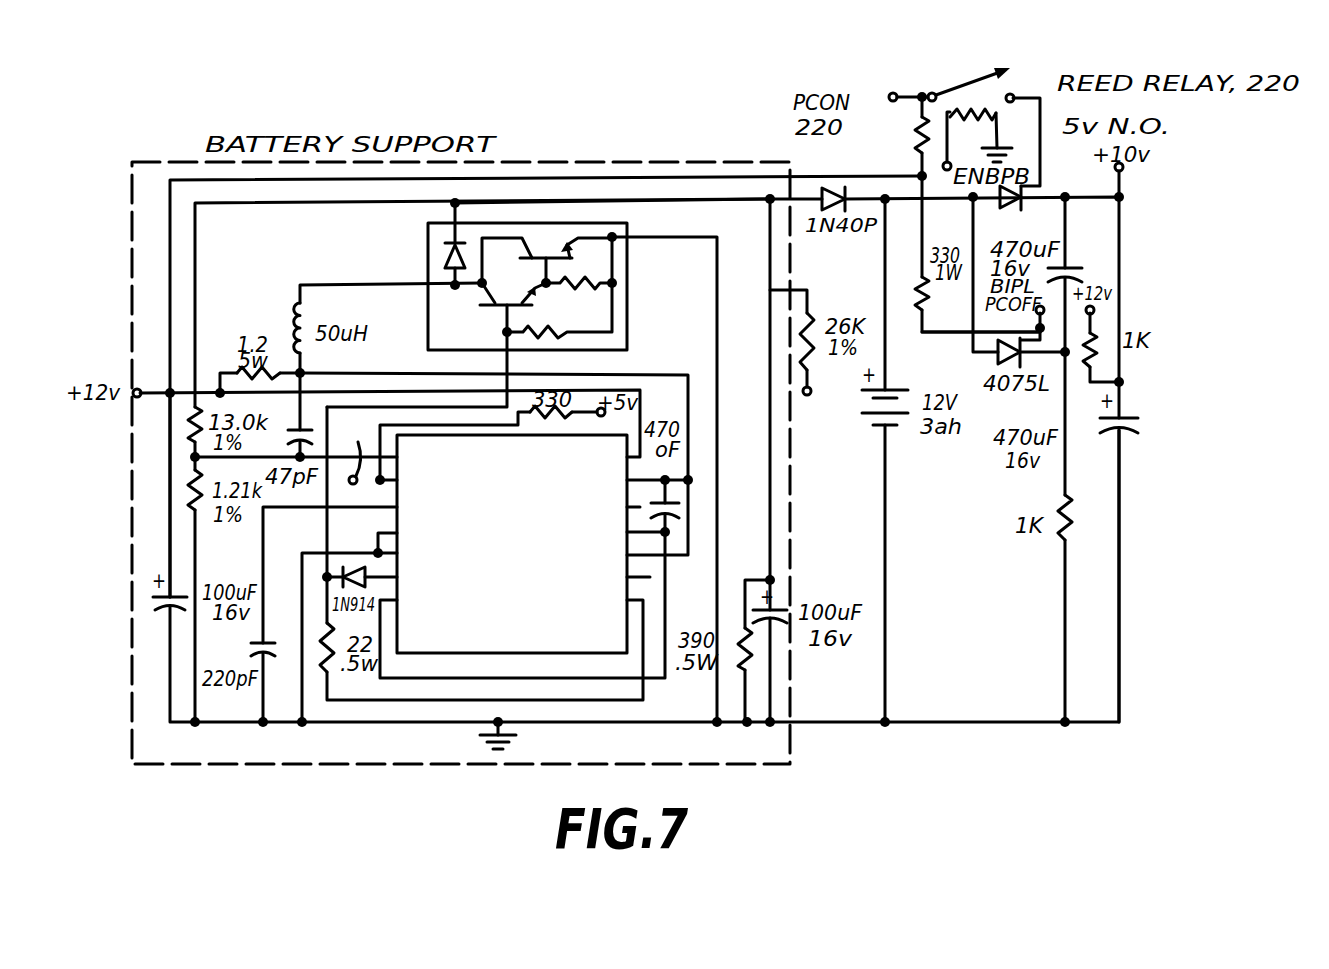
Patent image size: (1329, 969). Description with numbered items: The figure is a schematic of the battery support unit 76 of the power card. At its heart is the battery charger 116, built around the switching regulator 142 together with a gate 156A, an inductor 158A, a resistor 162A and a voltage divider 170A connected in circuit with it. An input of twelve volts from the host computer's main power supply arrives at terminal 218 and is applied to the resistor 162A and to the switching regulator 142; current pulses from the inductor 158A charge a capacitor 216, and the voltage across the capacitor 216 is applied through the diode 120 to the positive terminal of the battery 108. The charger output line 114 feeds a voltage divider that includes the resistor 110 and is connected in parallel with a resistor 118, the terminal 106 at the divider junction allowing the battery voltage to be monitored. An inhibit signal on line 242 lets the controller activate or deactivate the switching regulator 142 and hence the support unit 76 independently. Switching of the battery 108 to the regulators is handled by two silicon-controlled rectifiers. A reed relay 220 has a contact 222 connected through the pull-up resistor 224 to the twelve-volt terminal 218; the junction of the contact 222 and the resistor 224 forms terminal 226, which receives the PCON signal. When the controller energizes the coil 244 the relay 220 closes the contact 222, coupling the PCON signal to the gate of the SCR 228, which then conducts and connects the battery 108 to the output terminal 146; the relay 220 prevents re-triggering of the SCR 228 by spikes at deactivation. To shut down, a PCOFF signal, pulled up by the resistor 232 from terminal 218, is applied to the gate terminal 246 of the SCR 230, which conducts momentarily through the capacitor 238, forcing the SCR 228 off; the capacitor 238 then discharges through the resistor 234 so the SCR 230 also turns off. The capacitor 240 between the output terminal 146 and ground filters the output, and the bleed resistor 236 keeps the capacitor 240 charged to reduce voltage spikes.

The battery support unit 76 is at (1148, 576).
The terminal 106 is at (805, 386).
The battery 108 is at (877, 427).
The resistor 110 is at (800, 333).
The output line 114 is at (648, 204).
The battery charger 116 is at (265, 765).
The resistor 118 is at (745, 655).
The diode 120 is at (828, 190).
The switching regulator 142 is at (483, 656).
The output terminal 146 is at (1122, 180).
The gate 156A is at (428, 242).
The inductor 158A is at (296, 307).
The resistor 162A is at (280, 371).
The voltage divider 170A is at (172, 435).
The capacitor 216 is at (777, 603).
The terminal 218 is at (148, 396).
The reed relay 220 is at (895, 138).
The contact 222 is at (967, 83).
The resistor 224 is at (919, 127).
The terminal 226 is at (892, 93).
The SCR 228 is at (1012, 206).
The SCR 230 is at (922, 391).
The resistor 232 is at (920, 277).
The resistor 234 is at (1060, 535).
The resistor 236 is at (1095, 345).
The capacitor 238 is at (1078, 266).
The capacitor 240 is at (1130, 432).
The line 242 is at (354, 444).
The coil 244 is at (985, 97).
The gate terminal 246 is at (967, 351).